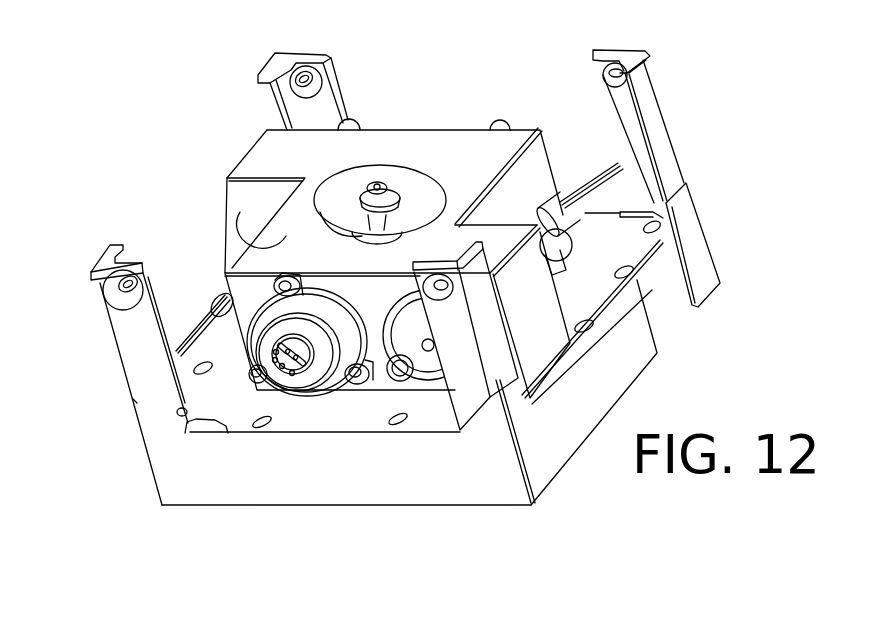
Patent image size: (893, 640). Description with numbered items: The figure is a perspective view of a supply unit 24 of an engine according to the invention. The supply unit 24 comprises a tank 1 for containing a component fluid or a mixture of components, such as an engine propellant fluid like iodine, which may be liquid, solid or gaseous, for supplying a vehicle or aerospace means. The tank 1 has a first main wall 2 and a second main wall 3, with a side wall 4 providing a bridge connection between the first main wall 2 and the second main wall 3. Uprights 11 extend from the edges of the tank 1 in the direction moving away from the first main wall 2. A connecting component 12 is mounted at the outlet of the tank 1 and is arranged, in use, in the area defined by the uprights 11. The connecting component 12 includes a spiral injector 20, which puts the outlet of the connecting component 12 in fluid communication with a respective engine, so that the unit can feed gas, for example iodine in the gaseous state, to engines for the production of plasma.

The tank 1 is at (643, 367).
The first main wall 2 is at (562, 470).
The second main wall 3 is at (314, 413).
The side wall 4 is at (467, 488).
The uprights 11 is at (121, 352).
The connecting component 12 is at (468, 137).
The spiral injector 20 is at (414, 208).
The supply unit 24 is at (717, 110).